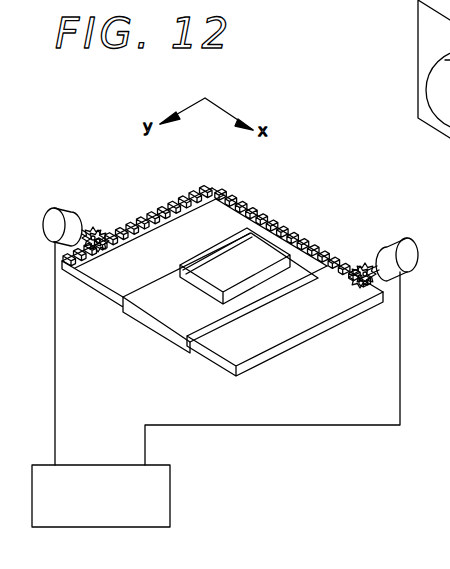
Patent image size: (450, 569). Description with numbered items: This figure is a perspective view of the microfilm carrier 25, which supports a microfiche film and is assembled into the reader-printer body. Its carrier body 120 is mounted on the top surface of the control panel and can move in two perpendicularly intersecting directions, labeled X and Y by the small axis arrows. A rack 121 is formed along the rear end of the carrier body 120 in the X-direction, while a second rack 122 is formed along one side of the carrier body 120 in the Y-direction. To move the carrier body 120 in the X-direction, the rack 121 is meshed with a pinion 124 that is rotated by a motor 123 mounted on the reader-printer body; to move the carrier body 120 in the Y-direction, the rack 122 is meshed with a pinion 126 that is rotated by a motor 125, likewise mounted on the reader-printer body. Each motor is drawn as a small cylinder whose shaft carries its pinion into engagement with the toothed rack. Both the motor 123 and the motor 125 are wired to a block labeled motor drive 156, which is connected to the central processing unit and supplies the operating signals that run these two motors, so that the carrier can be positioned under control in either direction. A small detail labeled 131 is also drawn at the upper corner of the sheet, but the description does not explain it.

The microfilm carrier 25 is at (279, 206).
The carrier body 120 is at (303, 318).
The rack 121 is at (301, 236).
The rack 122 is at (154, 203).
The motor 123 is at (410, 270).
The pinion 124 is at (363, 263).
The motor 125 is at (55, 208).
The pinion 126 is at (90, 228).
The detail view 131 is at (449, 138).
The motor drive 156 is at (171, 494).